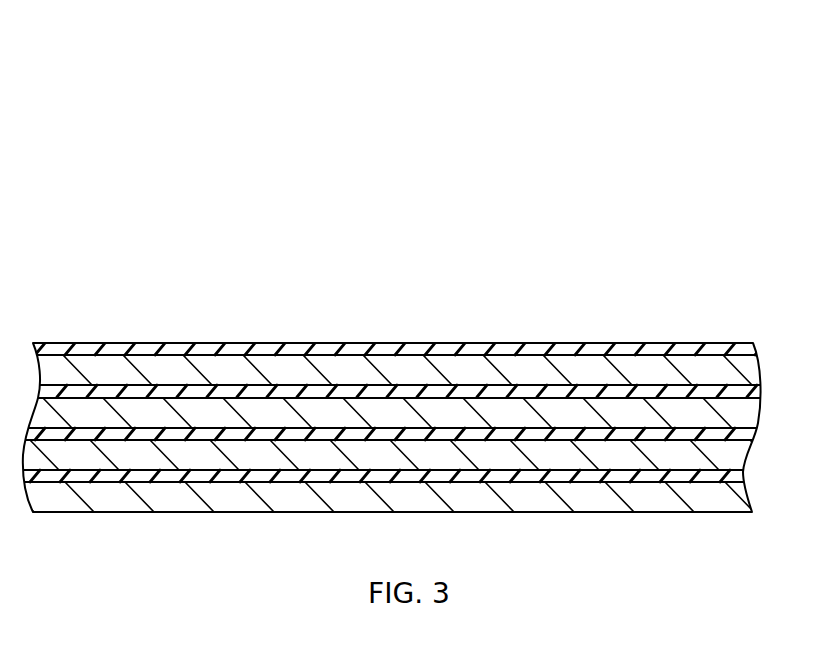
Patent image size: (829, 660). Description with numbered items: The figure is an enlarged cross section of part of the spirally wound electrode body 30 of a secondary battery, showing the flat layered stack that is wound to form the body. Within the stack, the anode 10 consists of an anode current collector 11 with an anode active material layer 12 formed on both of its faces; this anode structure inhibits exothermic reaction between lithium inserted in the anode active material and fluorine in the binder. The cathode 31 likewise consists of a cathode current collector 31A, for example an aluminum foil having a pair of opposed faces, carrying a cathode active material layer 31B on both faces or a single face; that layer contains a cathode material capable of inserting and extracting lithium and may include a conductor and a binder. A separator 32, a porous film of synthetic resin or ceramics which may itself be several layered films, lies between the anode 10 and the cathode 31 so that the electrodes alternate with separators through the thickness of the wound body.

The spirally wound electrode body 30 is at (400, 275).
The cathode 31 is at (275, 253).
The cathode current collector 31A is at (62, 388).
The cathode active material layer 31B is at (262, 358).
The separator 32 is at (737, 353).
The anode 10 is at (393, 253).
The anode current collector 11 is at (413, 477).
The anode active material layer 12 is at (633, 448).